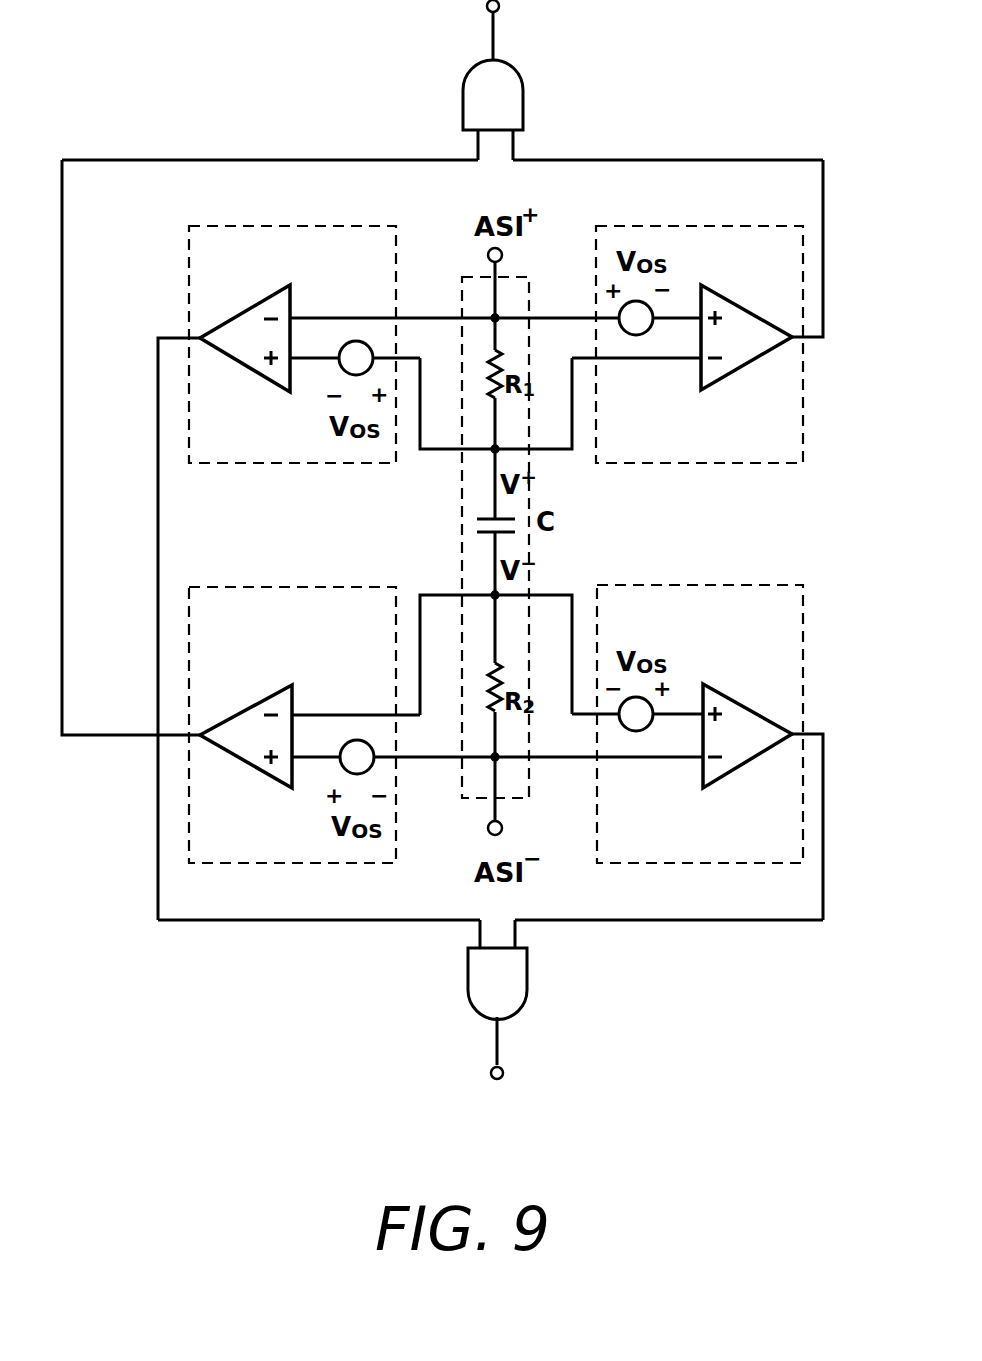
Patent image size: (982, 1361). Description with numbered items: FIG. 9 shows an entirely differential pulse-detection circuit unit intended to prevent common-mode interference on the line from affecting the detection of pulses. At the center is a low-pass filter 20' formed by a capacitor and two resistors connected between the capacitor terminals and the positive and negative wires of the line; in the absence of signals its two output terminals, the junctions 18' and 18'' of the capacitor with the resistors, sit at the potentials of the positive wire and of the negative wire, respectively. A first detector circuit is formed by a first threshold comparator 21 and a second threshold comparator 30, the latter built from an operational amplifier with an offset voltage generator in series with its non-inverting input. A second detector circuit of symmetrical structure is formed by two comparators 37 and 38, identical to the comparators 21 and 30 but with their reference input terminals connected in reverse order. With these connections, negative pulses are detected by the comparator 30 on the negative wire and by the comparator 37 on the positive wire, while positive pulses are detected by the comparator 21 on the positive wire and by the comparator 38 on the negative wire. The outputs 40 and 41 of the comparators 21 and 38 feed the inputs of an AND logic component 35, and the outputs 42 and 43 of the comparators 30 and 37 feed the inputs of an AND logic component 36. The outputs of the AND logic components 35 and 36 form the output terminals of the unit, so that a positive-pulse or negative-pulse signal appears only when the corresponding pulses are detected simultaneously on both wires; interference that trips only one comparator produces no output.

The AND logic component 35 is at (505, 105).
The AND logic component 36 is at (507, 983).
The comparator 37 is at (303, 233).
The comparator 38 is at (303, 595).
The first threshold comparator 21 is at (688, 233).
The second threshold comparator 30 is at (688, 593).
The output of comparator 37 43 is at (187, 336).
The output of comparator 38 41 is at (147, 733).
The output of comparator 21 40 is at (813, 340).
The output of comparator 30 42 is at (813, 730).
The output terminal of the filter 18' is at (475, 413).
The output terminal of the filter 18'' is at (480, 655).
The low-pass filter 20' is at (549, 537).